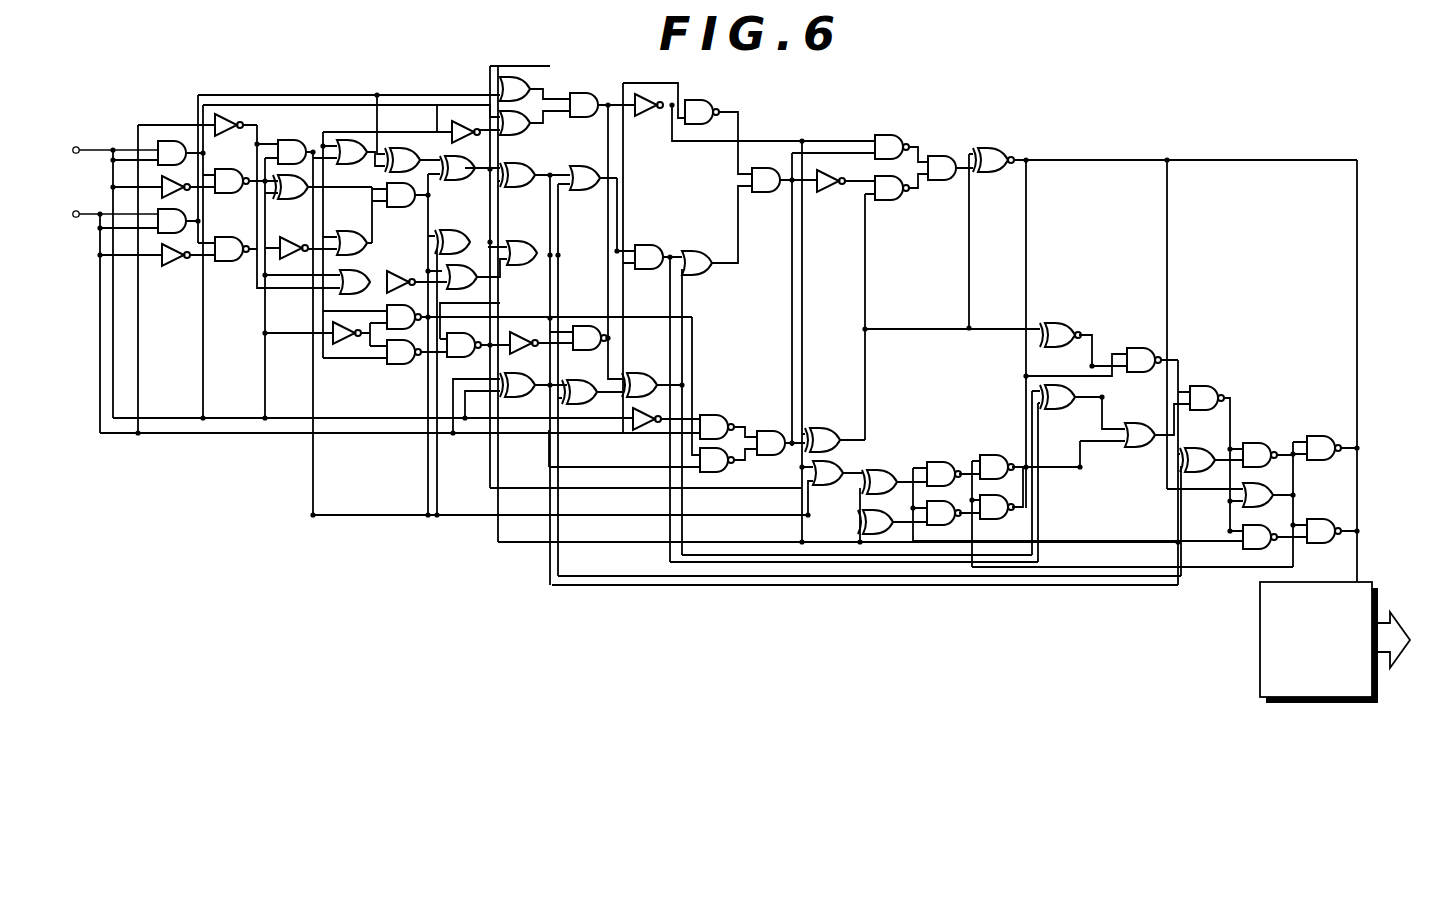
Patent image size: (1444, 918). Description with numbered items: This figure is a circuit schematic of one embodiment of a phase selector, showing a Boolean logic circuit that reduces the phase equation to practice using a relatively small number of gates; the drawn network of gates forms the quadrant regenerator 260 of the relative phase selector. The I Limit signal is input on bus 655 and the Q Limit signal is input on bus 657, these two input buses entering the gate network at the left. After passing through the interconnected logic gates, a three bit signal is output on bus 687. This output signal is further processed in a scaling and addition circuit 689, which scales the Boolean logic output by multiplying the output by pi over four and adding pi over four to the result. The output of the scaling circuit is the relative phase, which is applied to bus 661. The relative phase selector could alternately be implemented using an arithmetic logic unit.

The quadrant regenerator 260 is at (1134, 140).
The bus 655 is at (98, 148).
The bus 657 is at (90, 216).
The bus 687 is at (1357, 567).
The scaling and addition circuit 689 is at (1280, 703).
The bus 661 is at (1383, 650).